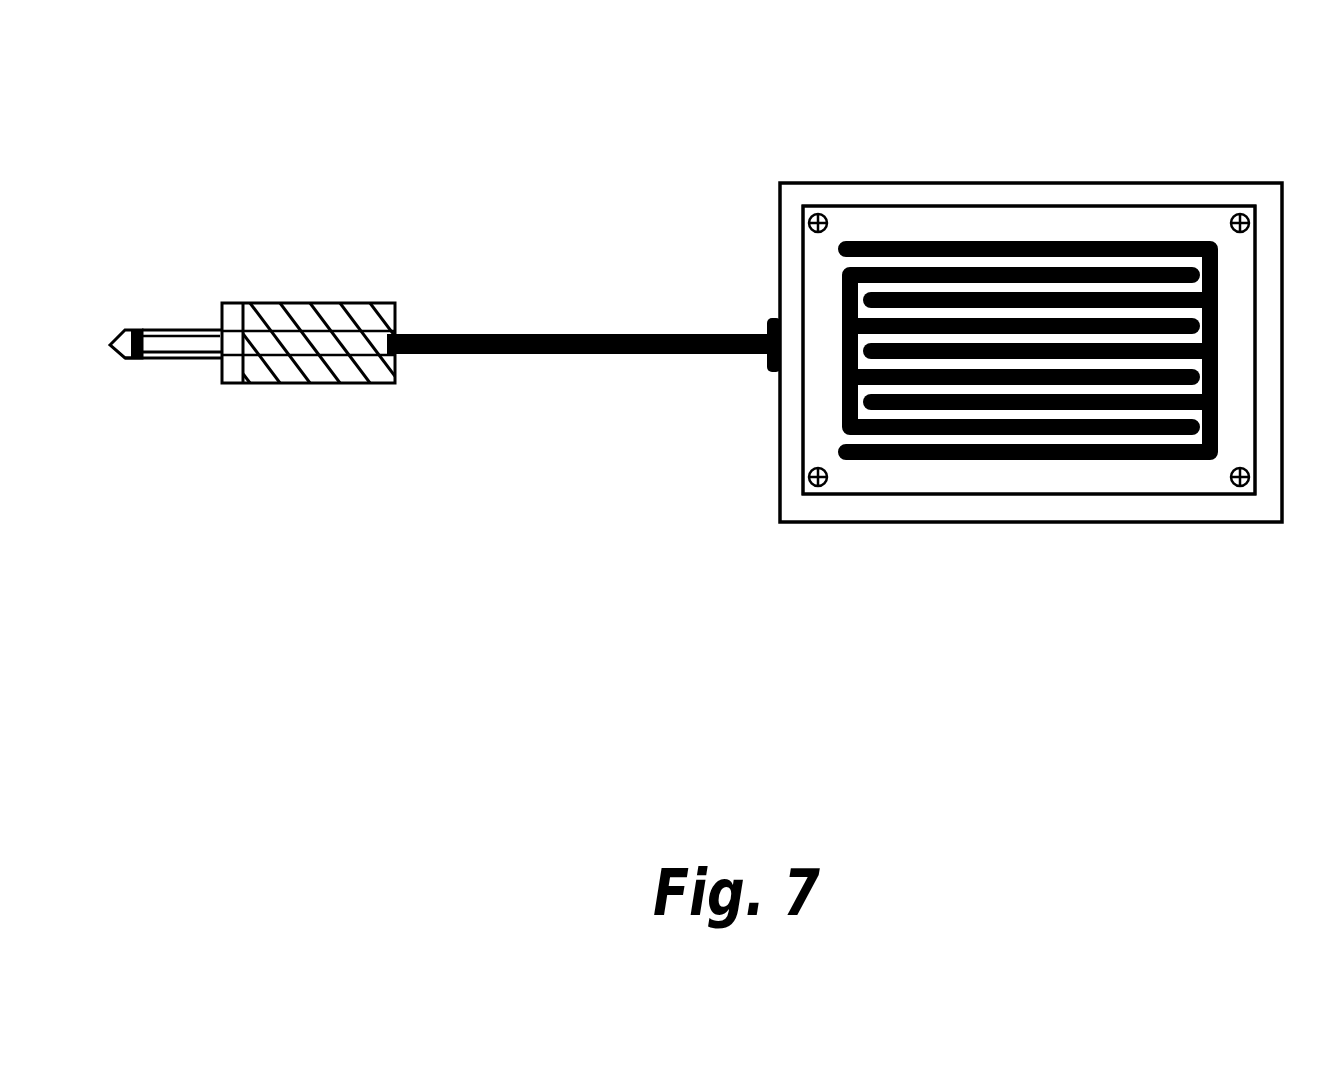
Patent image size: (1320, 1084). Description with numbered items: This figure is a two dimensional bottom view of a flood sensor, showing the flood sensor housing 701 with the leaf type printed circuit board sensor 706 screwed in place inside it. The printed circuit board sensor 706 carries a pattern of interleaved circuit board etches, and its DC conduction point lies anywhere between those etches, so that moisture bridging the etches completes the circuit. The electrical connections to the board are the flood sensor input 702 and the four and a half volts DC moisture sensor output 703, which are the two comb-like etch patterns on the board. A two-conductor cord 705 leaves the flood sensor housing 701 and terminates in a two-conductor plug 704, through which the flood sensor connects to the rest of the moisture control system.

The flood sensor housing 701 is at (1053, 182).
The flood sensor input 702 is at (843, 243).
The 4.5 volts DC moisture sensor output 703 is at (843, 273).
The two-conductor plug 704 is at (320, 305).
The two-conductor cord 705 is at (638, 355).
The printed circuit board sensor 706 is at (890, 477).